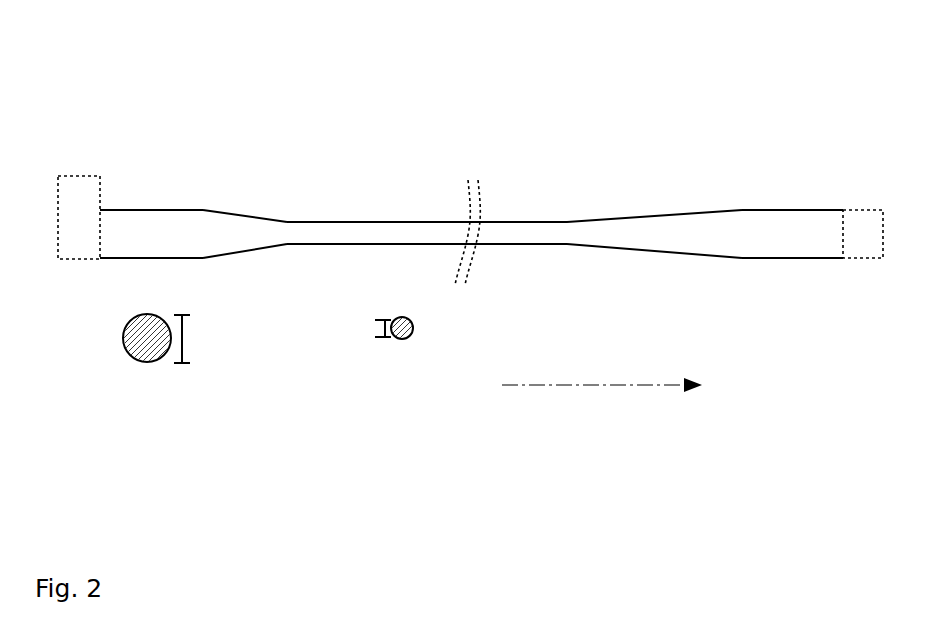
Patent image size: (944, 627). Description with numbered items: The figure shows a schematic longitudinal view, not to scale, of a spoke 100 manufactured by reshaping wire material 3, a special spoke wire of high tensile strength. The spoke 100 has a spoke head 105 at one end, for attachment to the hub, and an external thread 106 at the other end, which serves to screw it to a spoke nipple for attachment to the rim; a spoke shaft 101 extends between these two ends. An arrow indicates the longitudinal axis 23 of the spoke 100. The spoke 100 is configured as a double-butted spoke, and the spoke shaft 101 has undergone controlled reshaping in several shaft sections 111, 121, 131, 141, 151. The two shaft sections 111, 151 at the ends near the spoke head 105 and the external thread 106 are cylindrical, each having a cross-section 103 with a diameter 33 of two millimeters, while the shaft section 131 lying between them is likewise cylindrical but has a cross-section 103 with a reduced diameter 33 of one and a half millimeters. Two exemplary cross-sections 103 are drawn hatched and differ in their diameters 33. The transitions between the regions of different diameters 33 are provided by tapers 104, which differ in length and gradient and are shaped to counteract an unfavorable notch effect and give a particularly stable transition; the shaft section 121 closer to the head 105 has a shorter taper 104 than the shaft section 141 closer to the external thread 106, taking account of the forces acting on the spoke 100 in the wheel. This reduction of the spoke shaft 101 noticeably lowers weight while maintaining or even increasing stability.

The spoke 100 is at (90, 59).
The spoke shaft 101 is at (128, 155).
The wire material 3 is at (583, 235).
The longitudinal axis 23 is at (585, 385).
The diameter 33 is at (185, 365).
The cross-section 103 is at (143, 345).
The taper 104 is at (256, 261).
The spoke head 105 is at (75, 246).
The external thread 106 is at (873, 247).
The shaft section 111 is at (165, 232).
The shaft section 121 is at (243, 232).
The shaft section 131 is at (370, 233).
The shaft section 141 is at (655, 233).
The shaft section 151 is at (788, 232).